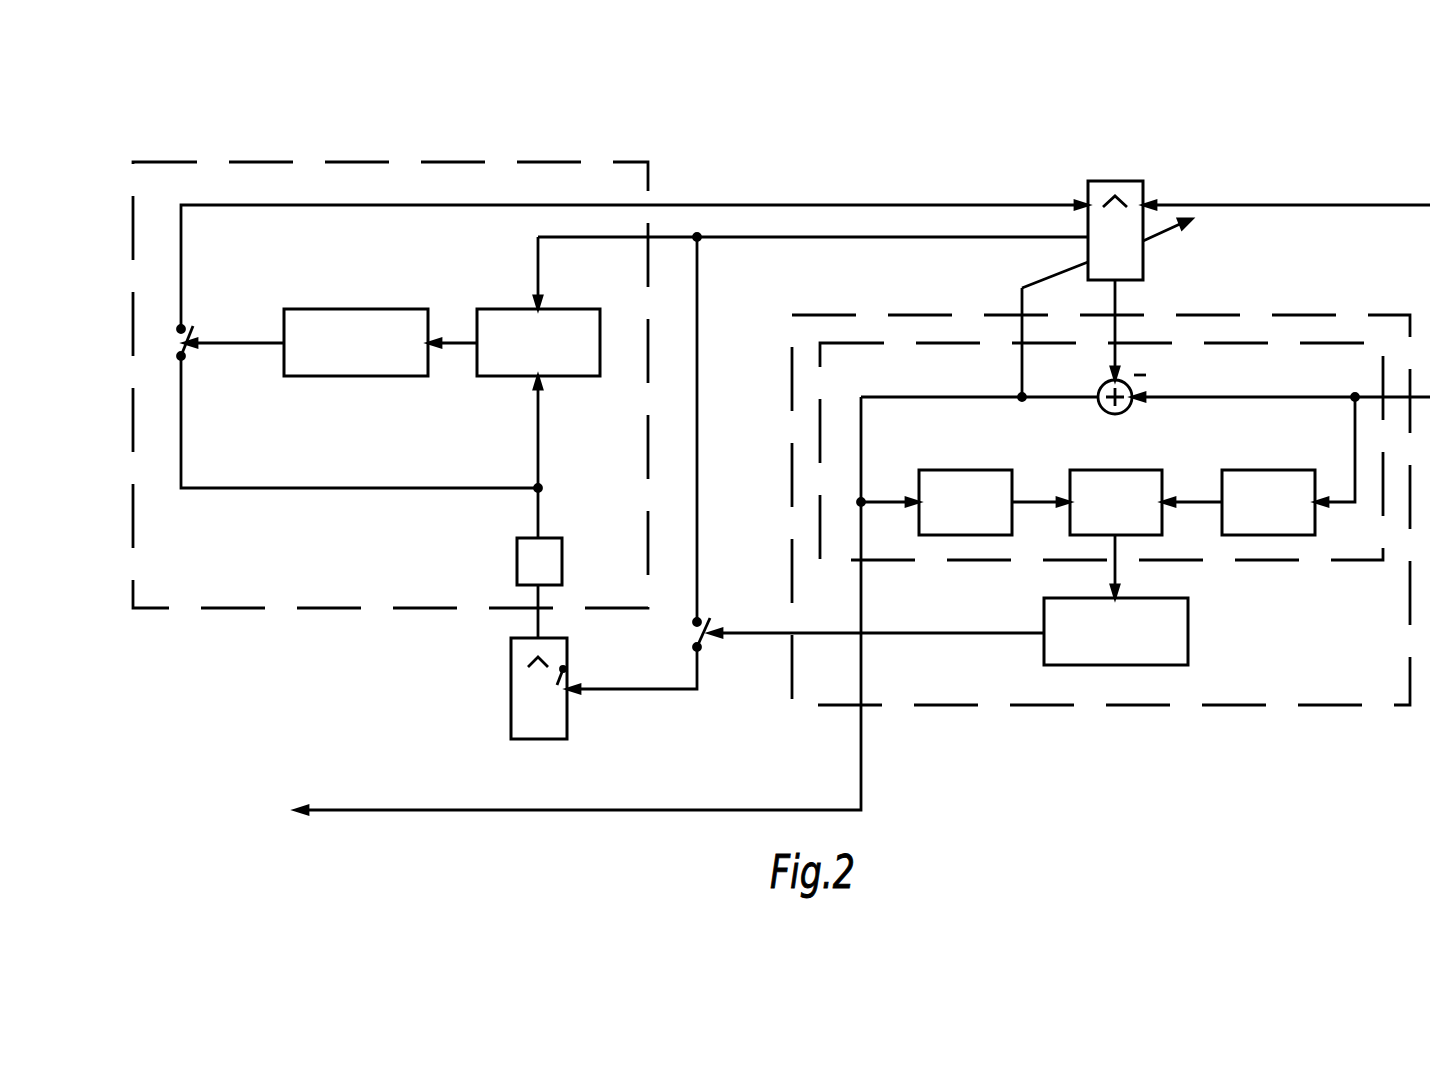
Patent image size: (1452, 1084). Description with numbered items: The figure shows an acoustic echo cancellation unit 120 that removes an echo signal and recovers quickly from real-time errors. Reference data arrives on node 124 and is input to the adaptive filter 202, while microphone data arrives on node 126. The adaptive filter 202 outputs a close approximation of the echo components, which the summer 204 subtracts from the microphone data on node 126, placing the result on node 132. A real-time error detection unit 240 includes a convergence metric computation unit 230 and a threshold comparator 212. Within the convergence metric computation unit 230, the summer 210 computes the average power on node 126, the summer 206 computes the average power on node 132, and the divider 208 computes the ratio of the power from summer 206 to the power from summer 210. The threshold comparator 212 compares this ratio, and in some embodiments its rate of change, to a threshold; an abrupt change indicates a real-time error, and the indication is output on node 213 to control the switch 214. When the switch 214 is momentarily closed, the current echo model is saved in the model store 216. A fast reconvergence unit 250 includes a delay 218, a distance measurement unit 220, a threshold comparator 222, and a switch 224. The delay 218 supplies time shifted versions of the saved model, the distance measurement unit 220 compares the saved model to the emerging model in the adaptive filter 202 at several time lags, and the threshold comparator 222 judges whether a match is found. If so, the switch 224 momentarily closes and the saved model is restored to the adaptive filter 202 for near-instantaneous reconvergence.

The acoustic echo cancellation unit 120 is at (1208, 741).
The node 124 is at (1282, 204).
The node 126 is at (1365, 396).
The node 132 is at (625, 810).
The adaptive filter 202 is at (1108, 181).
The summer 204 is at (1103, 410).
The summer 206 is at (935, 470).
The divider 208 is at (1143, 470).
The summer 210 is at (1275, 470).
The threshold comparator 212 is at (1190, 648).
The node 213 is at (748, 637).
The switch 214 is at (703, 626).
The model store 216 is at (537, 740).
The delay 218 is at (517, 552).
The distance measurement unit 220 is at (583, 308).
The threshold comparator 222 is at (356, 309).
The switch 224 is at (184, 360).
The convergence metric computation unit 230 is at (1282, 562).
The real-time error detection unit 240 is at (1298, 315).
The fast reconvergence unit 250 is at (245, 160).